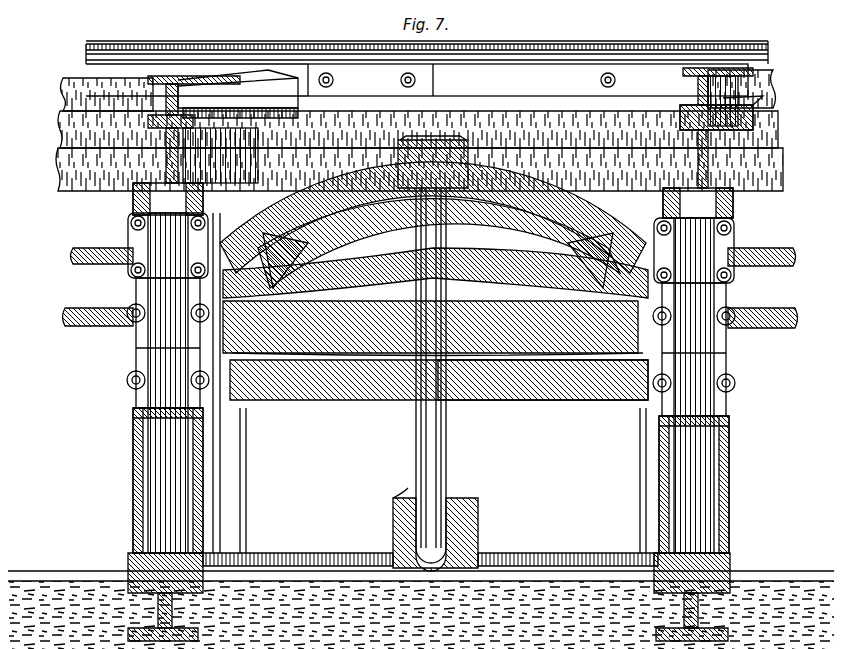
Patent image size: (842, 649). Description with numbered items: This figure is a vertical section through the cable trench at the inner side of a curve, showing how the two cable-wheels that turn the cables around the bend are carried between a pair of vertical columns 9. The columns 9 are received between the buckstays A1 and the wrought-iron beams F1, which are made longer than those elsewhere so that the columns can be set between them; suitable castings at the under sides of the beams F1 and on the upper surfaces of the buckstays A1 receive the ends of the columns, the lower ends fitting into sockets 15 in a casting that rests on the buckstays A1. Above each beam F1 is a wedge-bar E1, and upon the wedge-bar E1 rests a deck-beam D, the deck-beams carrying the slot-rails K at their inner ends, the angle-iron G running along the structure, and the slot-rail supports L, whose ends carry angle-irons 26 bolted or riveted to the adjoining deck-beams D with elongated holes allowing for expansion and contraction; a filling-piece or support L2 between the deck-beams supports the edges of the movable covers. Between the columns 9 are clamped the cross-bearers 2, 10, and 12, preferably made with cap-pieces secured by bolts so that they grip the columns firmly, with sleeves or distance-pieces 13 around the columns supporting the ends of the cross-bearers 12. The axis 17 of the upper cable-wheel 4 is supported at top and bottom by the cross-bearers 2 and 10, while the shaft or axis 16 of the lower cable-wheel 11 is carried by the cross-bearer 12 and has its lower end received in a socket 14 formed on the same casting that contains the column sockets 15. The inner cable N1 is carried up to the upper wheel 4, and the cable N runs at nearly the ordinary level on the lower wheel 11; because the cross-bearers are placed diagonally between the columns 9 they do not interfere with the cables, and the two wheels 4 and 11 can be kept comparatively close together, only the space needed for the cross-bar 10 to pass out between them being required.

The cross-bearer 2 is at (433, 217).
The cable-wheel 4 is at (550, 232).
The vertical column 9 is at (431, 383).
The cross-bearer 10 is at (435, 300).
The cable-wheel 11 is at (343, 350).
The cross-bearer 12 is at (543, 380).
The sleeve or distance-piece 13 is at (125, 450).
The socket 14 is at (437, 529).
The socket 15 is at (124, 548).
The axis 16 is at (443, 375).
The axis 17 is at (433, 179).
The angle-iron 26 is at (483, 82).
The buckstay A1 is at (120, 565).
The deck-beam D is at (690, 75).
The wedge-bar E1 is at (672, 108).
The wrought-iron beam F1 is at (731, 130).
The angle-iron G is at (419, 151).
The slot-rail K is at (505, 40).
The slot-rail support L is at (417, 80).
The filling-piece or support L2 is at (205, 93).
The cable N is at (417, 315).
The inner cable N1 is at (421, 252).